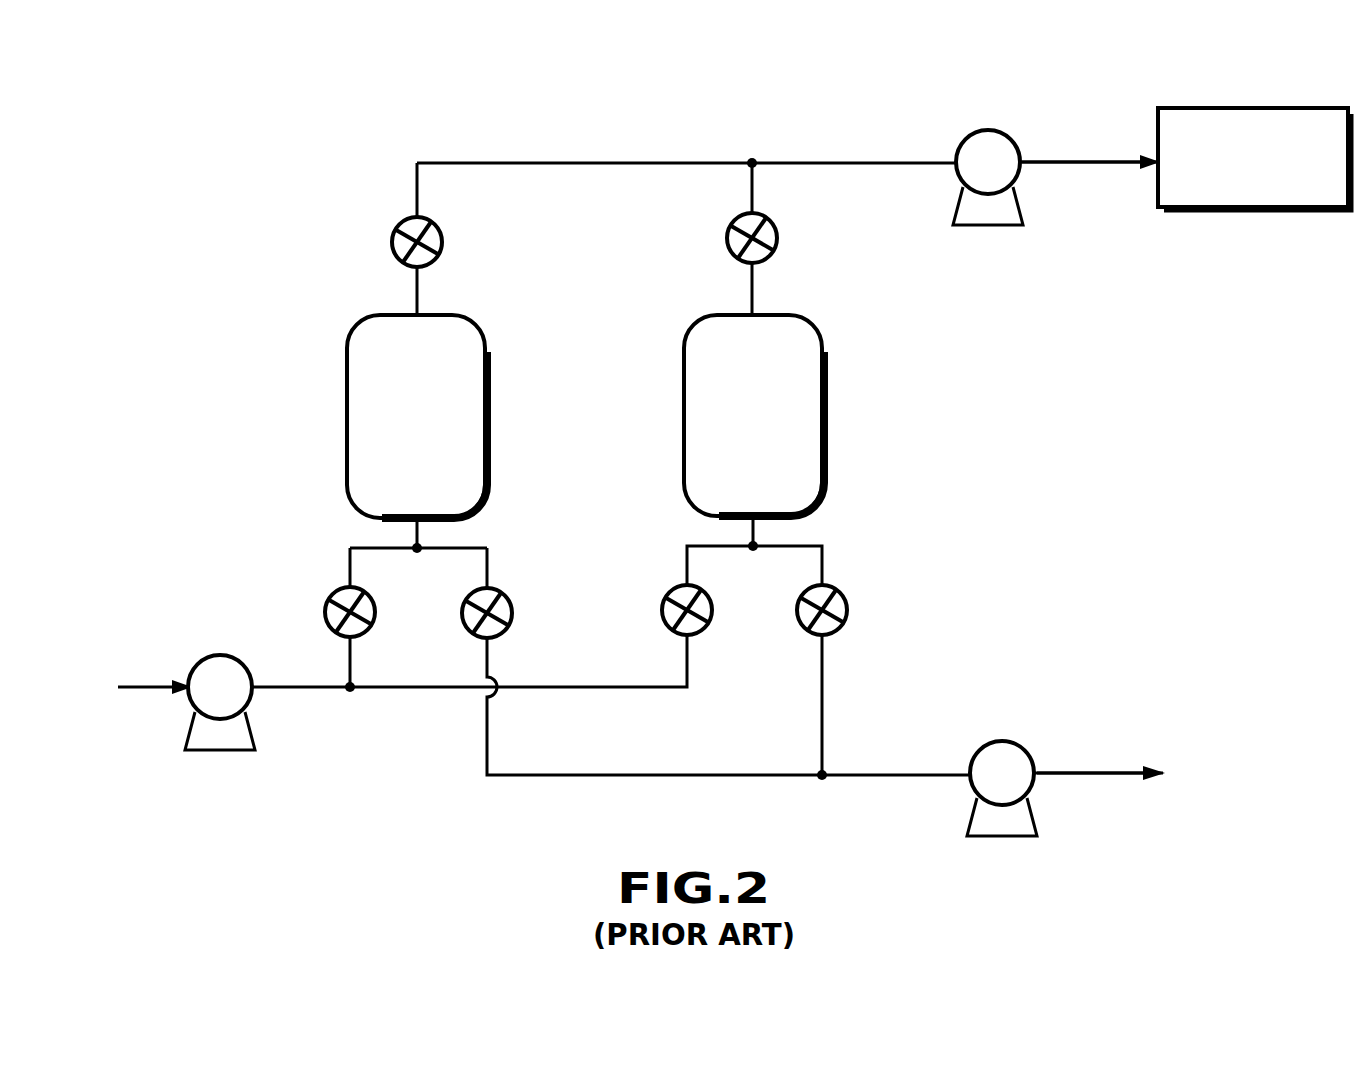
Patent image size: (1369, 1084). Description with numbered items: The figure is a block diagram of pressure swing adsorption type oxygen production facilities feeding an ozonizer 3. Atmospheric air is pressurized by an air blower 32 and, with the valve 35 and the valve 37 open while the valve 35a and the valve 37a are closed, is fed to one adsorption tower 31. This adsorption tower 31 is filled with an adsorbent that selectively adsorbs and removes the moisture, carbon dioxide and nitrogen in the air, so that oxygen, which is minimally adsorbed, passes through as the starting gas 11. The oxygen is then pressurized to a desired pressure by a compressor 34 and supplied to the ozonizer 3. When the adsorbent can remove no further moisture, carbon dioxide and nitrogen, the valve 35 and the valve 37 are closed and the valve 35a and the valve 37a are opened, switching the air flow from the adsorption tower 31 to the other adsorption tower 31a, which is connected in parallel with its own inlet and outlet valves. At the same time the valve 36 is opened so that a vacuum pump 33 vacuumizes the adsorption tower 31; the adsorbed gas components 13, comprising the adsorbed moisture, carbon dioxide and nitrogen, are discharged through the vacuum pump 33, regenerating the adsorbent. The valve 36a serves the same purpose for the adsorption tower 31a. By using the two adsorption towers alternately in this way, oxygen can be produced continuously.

The ozonizer 3 is at (1226, 212).
The starting gas 11 is at (1088, 166).
The adsorbed gas components 13 is at (1102, 777).
The adsorption tower 31 is at (345, 383).
The adsorption tower 31a is at (824, 375).
The air blower 32 is at (218, 657).
The vacuum pump 33 is at (1025, 752).
The compressor 34 is at (1012, 140).
The valve 35 is at (328, 606).
The valve 35a is at (666, 602).
The valve 36 is at (509, 606).
The valve 36a is at (843, 600).
The valve 37 is at (392, 238).
The valve 37a is at (806, 221).